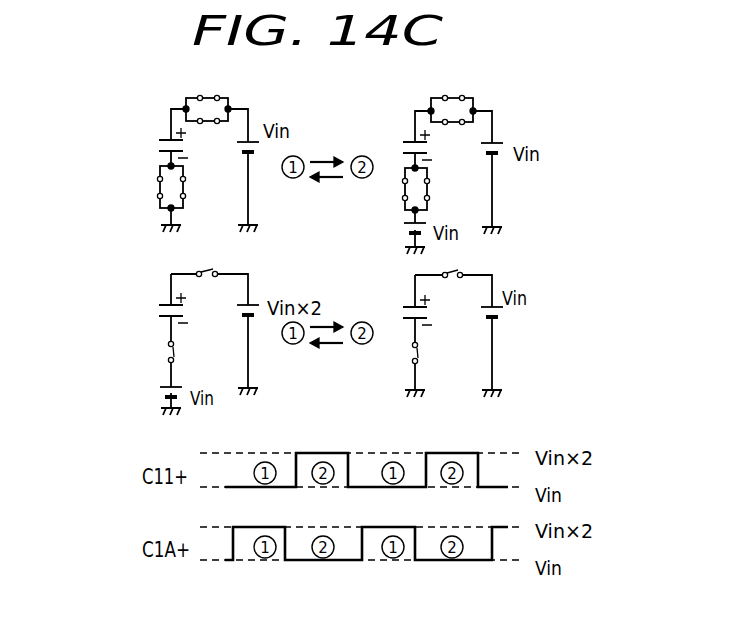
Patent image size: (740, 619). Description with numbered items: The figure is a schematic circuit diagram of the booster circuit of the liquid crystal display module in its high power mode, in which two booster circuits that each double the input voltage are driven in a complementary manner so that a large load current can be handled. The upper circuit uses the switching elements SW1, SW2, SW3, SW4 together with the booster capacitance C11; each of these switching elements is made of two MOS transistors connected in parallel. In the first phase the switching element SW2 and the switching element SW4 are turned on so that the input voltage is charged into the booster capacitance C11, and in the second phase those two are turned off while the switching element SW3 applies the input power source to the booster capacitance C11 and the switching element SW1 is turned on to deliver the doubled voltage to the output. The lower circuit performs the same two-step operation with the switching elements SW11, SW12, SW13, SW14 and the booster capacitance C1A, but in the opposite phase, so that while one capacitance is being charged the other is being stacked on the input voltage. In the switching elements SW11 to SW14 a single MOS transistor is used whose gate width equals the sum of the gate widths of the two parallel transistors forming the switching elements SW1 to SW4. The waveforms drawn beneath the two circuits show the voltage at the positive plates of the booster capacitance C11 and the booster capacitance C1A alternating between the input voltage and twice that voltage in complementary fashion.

The switching element SW1 is at (465, 83).
The switching element SW2 is at (220, 83).
The switching element SW3 is at (398, 188).
The switching element SW4 is at (155, 187).
The switching element SW11 is at (453, 269).
The switching element SW12 is at (212, 264).
The switching element SW13 is at (407, 353).
The switching element SW14 is at (162, 353).
The booster capacitance C11 is at (318, 155).
The booster capacitance C1A is at (313, 320).